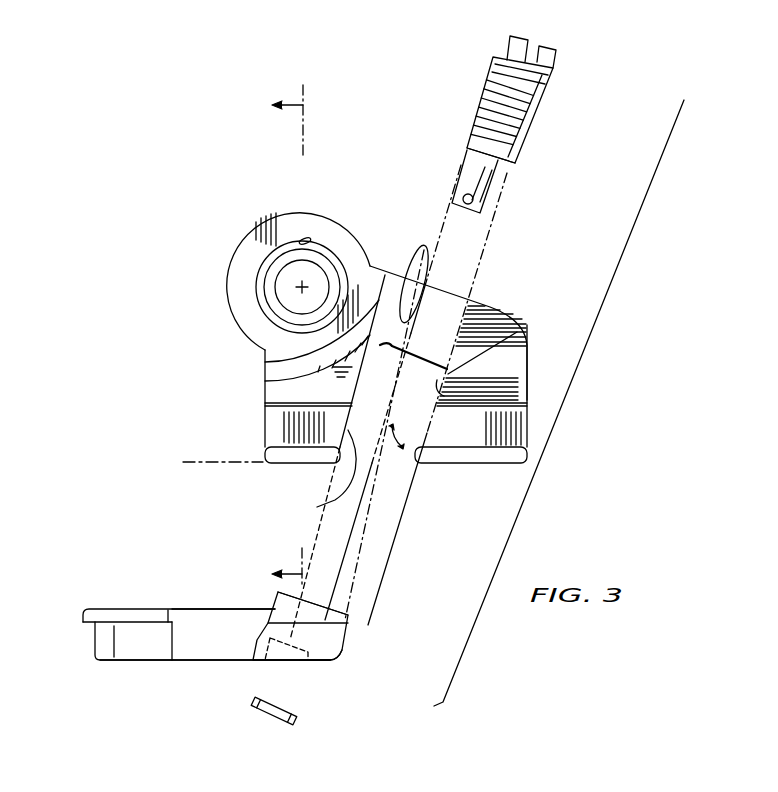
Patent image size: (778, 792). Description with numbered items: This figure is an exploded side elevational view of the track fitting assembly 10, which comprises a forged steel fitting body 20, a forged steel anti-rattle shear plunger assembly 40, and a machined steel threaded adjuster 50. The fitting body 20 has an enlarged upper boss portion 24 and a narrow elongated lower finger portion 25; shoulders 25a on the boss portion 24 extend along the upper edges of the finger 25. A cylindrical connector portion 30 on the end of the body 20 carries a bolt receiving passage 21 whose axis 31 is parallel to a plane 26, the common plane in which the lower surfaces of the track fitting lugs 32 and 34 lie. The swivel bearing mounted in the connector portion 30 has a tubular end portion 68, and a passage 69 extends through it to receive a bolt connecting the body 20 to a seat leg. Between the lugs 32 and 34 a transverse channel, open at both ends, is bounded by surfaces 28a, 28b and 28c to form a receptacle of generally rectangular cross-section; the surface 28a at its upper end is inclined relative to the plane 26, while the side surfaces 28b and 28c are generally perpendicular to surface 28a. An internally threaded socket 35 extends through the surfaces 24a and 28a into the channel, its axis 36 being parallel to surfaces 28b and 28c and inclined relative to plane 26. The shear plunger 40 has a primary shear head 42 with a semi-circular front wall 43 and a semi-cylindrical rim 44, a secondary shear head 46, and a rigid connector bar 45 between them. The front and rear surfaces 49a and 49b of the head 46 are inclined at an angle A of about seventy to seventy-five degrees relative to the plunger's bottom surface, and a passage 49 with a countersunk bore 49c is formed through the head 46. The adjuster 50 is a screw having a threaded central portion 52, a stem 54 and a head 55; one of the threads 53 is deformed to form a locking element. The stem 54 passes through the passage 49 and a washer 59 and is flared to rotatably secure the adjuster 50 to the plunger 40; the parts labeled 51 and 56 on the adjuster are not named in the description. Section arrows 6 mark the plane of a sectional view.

The track fitting assembly 10 is at (556, 425).
The fitting body 20 is at (287, 203).
The bolt receiving passage 21 is at (312, 240).
The upper boss portion 24 is at (518, 312).
The surface of fitting body 24a is at (476, 292).
The lower finger portion 25 is at (457, 432).
The shoulders 25a is at (272, 408).
The common plane 26 is at (200, 468).
The channel upper end surface 28a is at (430, 255).
The channel side surface 28b is at (320, 506).
The channel side surface 28c is at (520, 335).
The cylindrical connector portion 30 is at (318, 213).
The axis of passage 31 is at (297, 289).
The track fitting lug 32 is at (300, 468).
The track fitting lug 34 is at (510, 462).
The internally threaded socket 35 is at (478, 304).
The axis of threaded socket 36 is at (360, 512).
The shear plunger assembly 40 is at (129, 593).
The primary shear head 42 is at (158, 665).
The semi-circular front wall 43 is at (107, 640).
The semi-cylindrical rim 44 is at (83, 611).
The rigid connector bar 45 is at (238, 607).
The secondary shear head 46 is at (330, 642).
The passage 49 is at (338, 608).
The front surface of secondary shear head 49a is at (240, 655).
The rear surface of secondary shear head 49b is at (343, 650).
The countersunk bore 49c is at (312, 667).
The threaded adjuster 50 is at (505, 40).
The connector stem 51 is at (463, 148).
The threaded central portion 52 is at (548, 80).
The threads 53 is at (497, 88).
The stem 54 is at (483, 196).
The head 55 is at (556, 60).
The connector tabs 56 is at (530, 47).
The washer 59 is at (252, 703).
The tubular end portion 68 is at (278, 310).
The passage 69 is at (285, 280).
The section line 6- 6 is at (295, 338).
The angle A is at (404, 429).